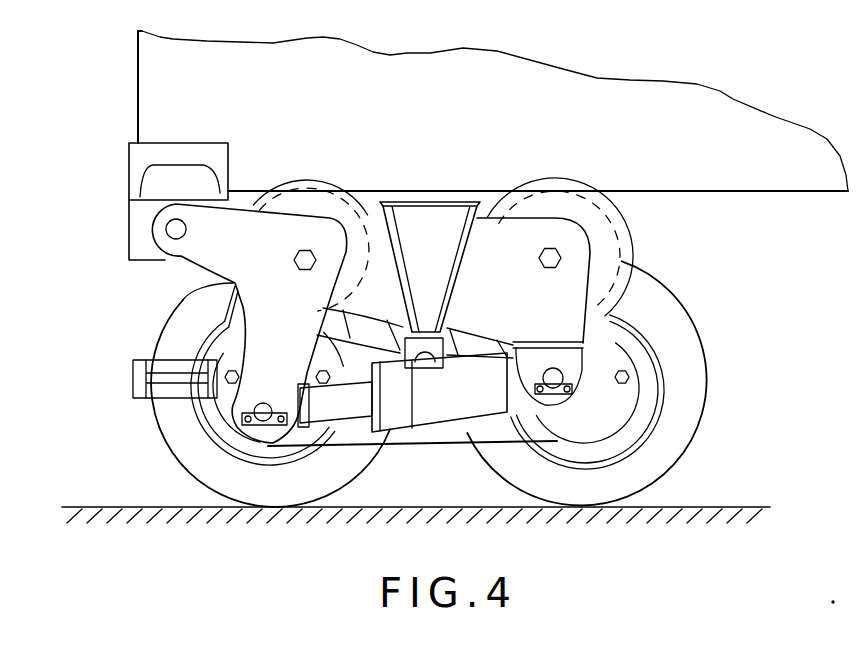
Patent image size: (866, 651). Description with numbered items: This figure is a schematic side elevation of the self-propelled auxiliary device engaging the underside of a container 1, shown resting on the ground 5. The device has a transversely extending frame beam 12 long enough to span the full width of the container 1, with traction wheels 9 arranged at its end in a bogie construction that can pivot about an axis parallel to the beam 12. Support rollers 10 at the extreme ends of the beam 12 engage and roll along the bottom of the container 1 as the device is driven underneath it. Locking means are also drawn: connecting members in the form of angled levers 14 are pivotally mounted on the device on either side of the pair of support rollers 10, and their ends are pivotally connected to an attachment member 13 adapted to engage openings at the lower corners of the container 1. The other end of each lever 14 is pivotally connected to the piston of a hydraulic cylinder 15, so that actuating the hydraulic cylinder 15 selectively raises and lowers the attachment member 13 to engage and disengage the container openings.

The container 1 is at (603, 92).
The ground surface 5 is at (744, 506).
The traction wheels 9 is at (177, 445).
The support rollers 10 is at (330, 207).
The beam 12 is at (430, 207).
The attachment member 13 is at (131, 207).
The connecting member 14 is at (220, 253).
The hydraulic cylinder 15 is at (397, 428).